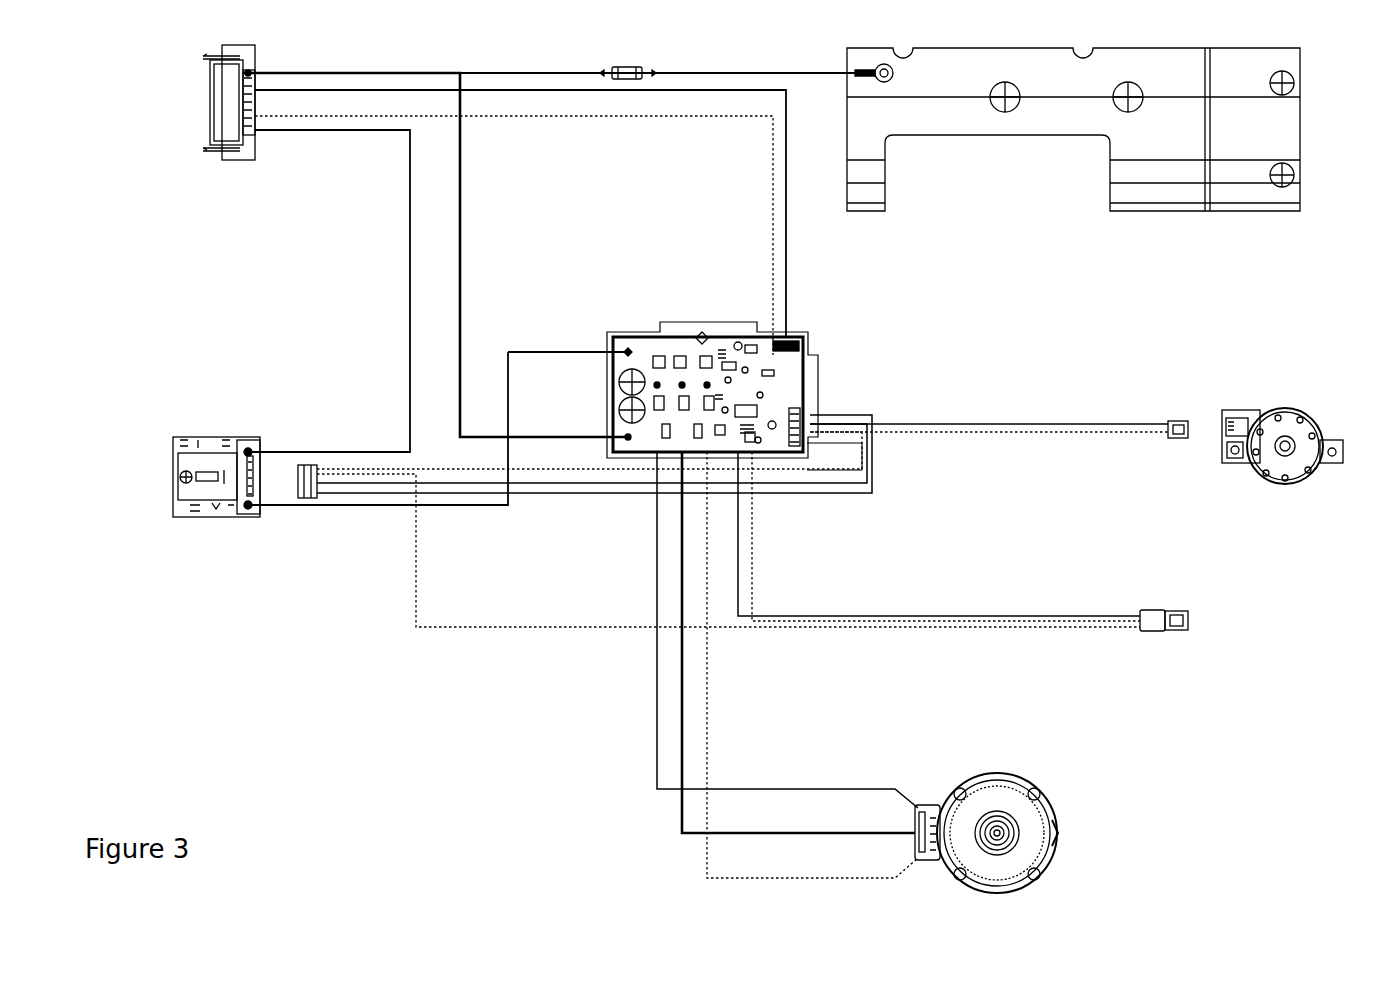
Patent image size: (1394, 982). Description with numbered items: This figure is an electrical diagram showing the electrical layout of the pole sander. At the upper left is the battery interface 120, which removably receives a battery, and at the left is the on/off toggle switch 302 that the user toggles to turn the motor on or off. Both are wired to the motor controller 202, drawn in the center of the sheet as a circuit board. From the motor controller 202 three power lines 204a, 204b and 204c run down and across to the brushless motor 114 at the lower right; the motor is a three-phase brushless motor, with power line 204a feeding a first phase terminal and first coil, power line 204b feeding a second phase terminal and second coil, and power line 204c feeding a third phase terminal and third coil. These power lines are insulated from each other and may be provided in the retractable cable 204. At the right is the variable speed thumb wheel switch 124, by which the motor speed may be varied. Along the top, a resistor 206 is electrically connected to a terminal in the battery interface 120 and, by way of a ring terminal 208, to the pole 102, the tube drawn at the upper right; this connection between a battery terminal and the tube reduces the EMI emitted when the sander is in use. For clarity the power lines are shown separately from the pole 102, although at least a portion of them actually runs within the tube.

The pole 102 is at (1009, 127).
The brushless motor 114 is at (1050, 800).
The battery interface 120 is at (215, 130).
The variable speed thumb wheel switch 124 is at (1318, 420).
The motor controller 202 is at (826, 380).
The retractable cable 204 is at (704, 665).
The power line 204a is at (657, 772).
The power line 204b is at (682, 810).
The power line 204c is at (707, 853).
The resistor 206 is at (628, 68).
The ring terminal 208 is at (875, 67).
The on/off toggle switch 302 is at (197, 490).